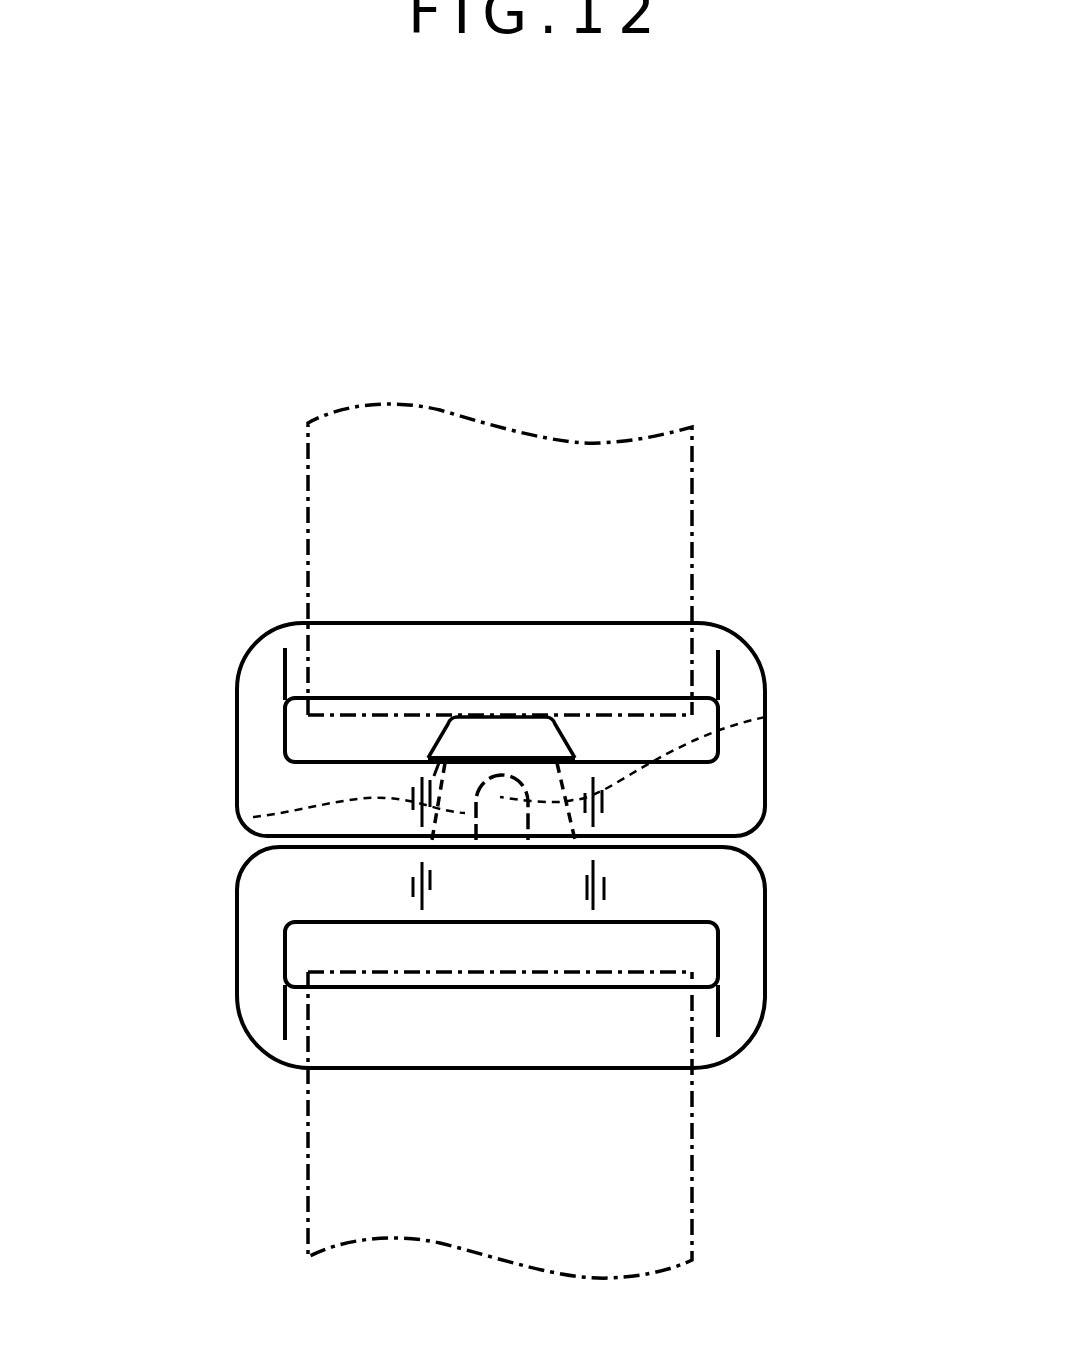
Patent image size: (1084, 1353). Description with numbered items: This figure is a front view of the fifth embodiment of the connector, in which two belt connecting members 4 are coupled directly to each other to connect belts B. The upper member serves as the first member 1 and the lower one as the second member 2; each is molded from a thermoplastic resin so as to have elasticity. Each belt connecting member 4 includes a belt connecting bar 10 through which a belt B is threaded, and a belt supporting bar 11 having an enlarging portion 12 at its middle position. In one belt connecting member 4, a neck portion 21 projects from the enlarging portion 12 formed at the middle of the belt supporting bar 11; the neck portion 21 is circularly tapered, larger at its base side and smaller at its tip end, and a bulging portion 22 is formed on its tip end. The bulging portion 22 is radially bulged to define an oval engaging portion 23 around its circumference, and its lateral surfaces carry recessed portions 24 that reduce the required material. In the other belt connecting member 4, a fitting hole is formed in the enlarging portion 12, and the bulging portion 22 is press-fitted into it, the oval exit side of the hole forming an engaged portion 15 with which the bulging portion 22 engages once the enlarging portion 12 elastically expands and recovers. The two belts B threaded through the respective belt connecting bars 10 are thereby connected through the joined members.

The first member 1 is at (253, 657).
The second member 2 is at (268, 1036).
The belt connecting member 4 is at (748, 654).
The belt connecting bar 10 is at (435, 648).
The belt supporting bar 11 is at (678, 783).
The enlarging portion 12 is at (497, 880).
The engaged portion 15 is at (413, 780).
The neck portion 21 is at (253, 817).
The bulging portion 22 is at (502, 737).
The engaging portion 23 is at (555, 735).
The recessed portions 24 is at (765, 717).
The belt B is at (650, 470).